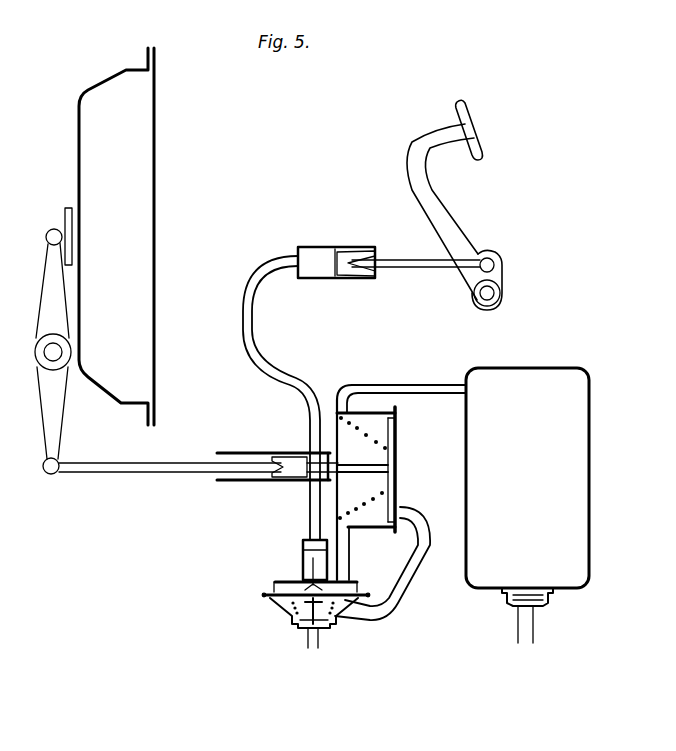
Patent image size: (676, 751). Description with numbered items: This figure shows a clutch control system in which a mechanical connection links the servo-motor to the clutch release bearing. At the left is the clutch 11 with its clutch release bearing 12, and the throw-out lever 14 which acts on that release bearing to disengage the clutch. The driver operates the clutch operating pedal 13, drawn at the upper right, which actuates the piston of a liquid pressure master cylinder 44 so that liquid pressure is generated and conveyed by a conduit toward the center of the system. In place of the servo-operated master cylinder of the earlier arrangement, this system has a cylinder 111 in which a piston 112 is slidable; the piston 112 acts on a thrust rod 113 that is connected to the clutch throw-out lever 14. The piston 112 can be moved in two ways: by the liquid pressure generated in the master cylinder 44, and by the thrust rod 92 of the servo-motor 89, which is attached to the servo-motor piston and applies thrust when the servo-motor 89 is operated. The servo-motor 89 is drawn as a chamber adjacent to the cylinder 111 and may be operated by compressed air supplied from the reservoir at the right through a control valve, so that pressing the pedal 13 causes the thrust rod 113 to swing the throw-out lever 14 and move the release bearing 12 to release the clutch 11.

The clutch 11 is at (116, 236).
The clutch release bearing 12 is at (57, 228).
The clutch operating pedal 13 is at (440, 198).
The throw-out lever 14 is at (55, 431).
The master cylinder 44 is at (327, 247).
The servo-motor 89 is at (370, 412).
The thrust rod 92 is at (355, 467).
The cylinder 111 is at (251, 453).
The piston 112 is at (290, 471).
The thrust rod 113 is at (110, 466).